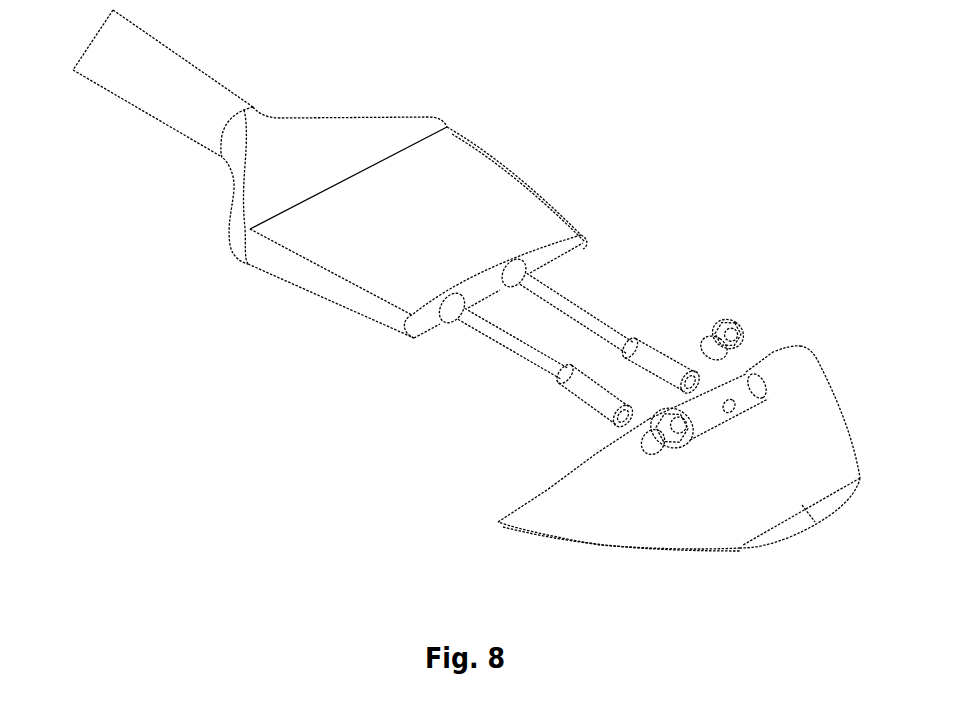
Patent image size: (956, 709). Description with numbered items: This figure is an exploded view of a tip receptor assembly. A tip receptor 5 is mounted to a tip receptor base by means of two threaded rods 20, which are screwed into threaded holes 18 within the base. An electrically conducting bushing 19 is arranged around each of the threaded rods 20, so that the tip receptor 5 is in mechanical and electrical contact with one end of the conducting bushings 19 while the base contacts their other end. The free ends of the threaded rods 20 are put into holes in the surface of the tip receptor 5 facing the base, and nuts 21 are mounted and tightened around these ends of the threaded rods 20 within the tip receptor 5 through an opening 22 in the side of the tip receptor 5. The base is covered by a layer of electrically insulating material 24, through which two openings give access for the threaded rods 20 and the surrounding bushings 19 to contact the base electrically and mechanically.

The tip receptor 5 is at (710, 523).
The threaded holes 18 is at (518, 270).
The electrically conducting bushing 19 is at (640, 350).
The threaded rods 20 is at (577, 308).
The nuts 21 is at (740, 340).
The opening 22 is at (727, 393).
The layer of electrically insulating material 24 is at (365, 241).